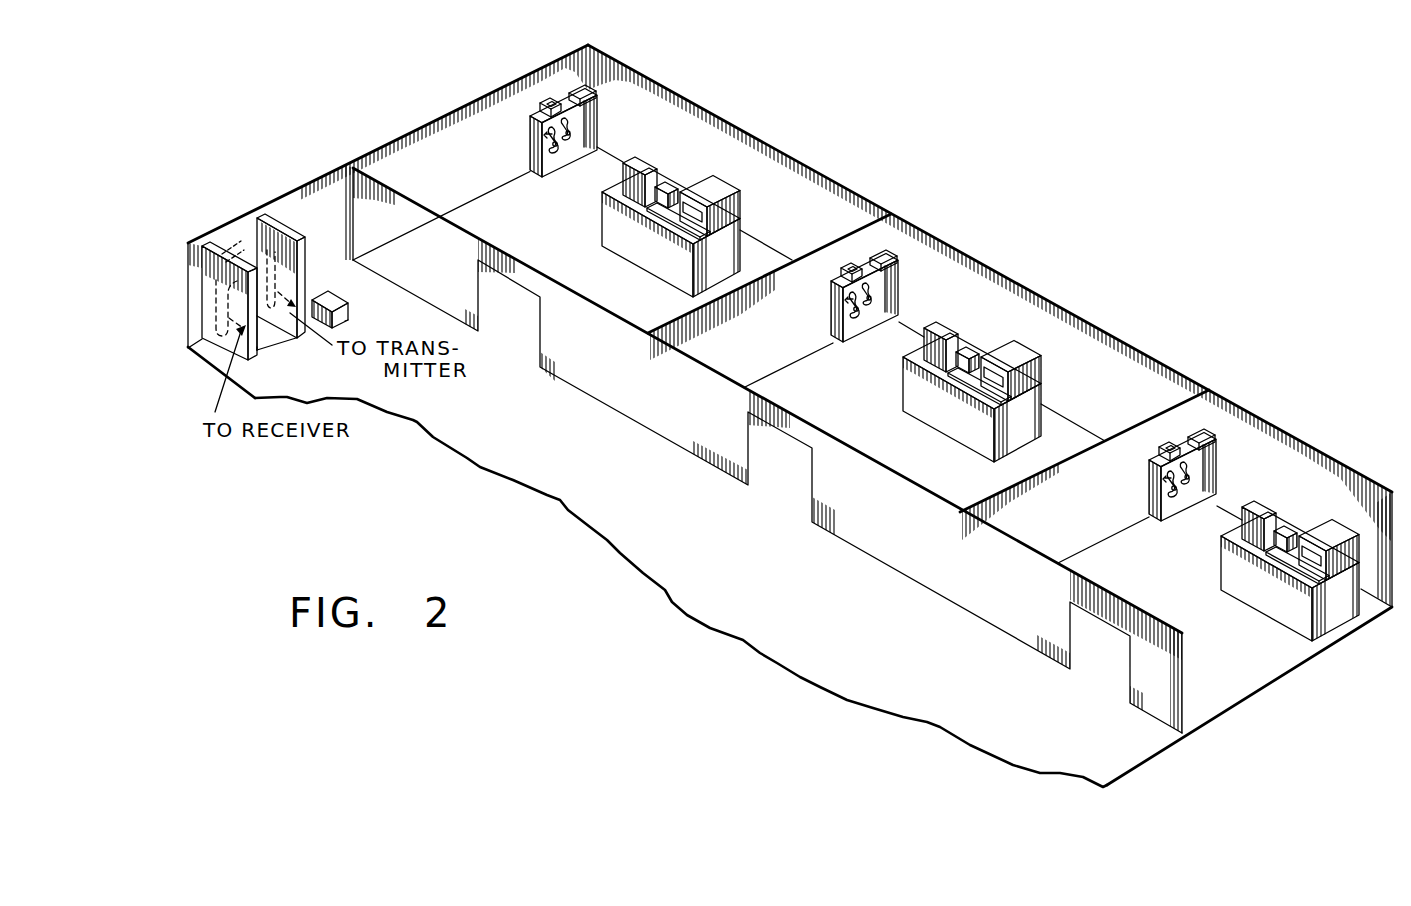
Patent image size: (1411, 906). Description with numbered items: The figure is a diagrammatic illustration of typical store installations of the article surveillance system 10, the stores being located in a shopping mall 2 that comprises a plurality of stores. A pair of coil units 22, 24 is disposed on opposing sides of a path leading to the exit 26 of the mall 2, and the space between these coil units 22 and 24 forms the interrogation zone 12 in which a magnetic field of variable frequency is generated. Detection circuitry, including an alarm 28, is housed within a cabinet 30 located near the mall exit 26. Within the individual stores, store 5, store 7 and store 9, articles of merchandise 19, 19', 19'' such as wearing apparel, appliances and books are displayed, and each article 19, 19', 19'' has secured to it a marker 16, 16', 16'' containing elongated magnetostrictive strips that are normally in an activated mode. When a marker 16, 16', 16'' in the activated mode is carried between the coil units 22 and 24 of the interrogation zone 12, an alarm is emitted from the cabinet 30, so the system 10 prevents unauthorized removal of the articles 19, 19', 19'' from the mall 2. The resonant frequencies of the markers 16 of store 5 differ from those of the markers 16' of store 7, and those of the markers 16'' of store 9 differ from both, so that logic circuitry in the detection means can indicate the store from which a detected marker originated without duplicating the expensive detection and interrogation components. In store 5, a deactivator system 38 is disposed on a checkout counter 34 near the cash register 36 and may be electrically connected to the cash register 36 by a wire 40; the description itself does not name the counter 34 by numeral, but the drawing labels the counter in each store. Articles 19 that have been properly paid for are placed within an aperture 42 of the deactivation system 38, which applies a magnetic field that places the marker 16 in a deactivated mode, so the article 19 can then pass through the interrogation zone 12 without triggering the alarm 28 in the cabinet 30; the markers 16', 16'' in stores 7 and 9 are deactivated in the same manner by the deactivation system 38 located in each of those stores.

The shopping mall 2 is at (608, 473).
The store 5 is at (550, 243).
The store 7 is at (843, 409).
The store 9 is at (1150, 578).
The article surveillance system 10 is at (350, 366).
The interrogation zone 12 is at (284, 349).
The marker 16 is at (563, 121).
The marker 16' is at (885, 283).
The marker 16'' is at (1208, 459).
The article 19 is at (516, 136).
The article 19' is at (812, 310).
The article 19'' is at (1125, 491).
The coil unit 22 is at (217, 279).
The coil unit 24 is at (271, 250).
The exit 26 is at (238, 240).
The alarm 28 is at (332, 298).
The cabinet 30 is at (345, 321).
The desk 34 is at (663, 272).
The cash register 36 is at (640, 163).
The deactivator system 38 is at (701, 190).
The wire 40 is at (660, 222).
The aperture 42 is at (690, 217).